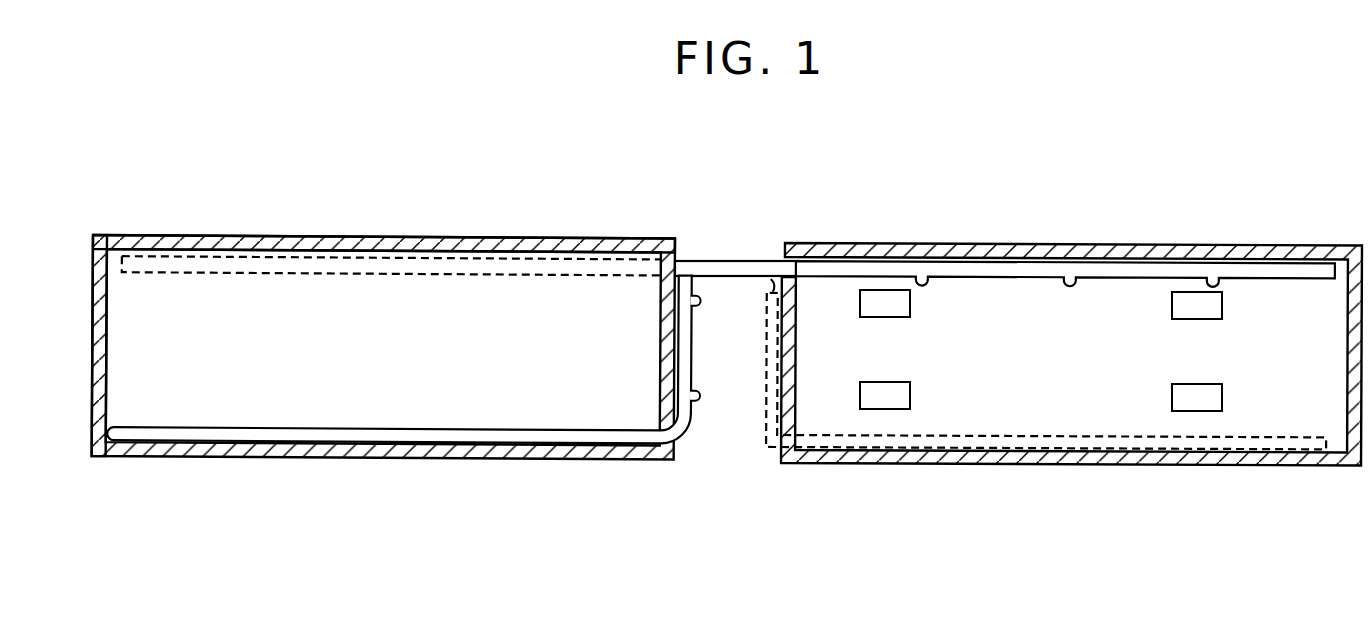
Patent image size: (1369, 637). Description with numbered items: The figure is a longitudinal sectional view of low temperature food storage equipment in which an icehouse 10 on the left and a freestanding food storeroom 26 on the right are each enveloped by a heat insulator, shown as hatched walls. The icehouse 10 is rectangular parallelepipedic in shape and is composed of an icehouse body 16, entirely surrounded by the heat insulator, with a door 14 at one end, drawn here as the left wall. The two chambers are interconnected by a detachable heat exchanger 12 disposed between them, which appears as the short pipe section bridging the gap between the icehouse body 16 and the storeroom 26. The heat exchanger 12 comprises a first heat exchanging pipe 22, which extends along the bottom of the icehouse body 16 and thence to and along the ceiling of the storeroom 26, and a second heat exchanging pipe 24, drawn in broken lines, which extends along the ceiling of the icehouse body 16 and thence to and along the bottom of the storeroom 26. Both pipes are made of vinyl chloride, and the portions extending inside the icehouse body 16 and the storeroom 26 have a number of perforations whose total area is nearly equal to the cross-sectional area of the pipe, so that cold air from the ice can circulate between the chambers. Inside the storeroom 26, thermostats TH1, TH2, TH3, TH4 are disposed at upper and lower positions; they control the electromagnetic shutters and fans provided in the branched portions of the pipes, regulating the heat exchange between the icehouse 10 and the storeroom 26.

The icehouse 10 is at (365, 468).
The heat exchanger 12 is at (727, 249).
The door 14 is at (93, 275).
The icehouse body 16 is at (434, 239).
The first heat exchanging pipe 22 is at (518, 434).
The second heat exchanging pipe 24 is at (580, 274).
The food storeroom 26 is at (1262, 244).
The thermostat TH1 is at (885, 303).
The thermostat TH2 is at (1197, 305).
The thermostat TH3 is at (885, 395).
The thermostat TH4 is at (1197, 397).